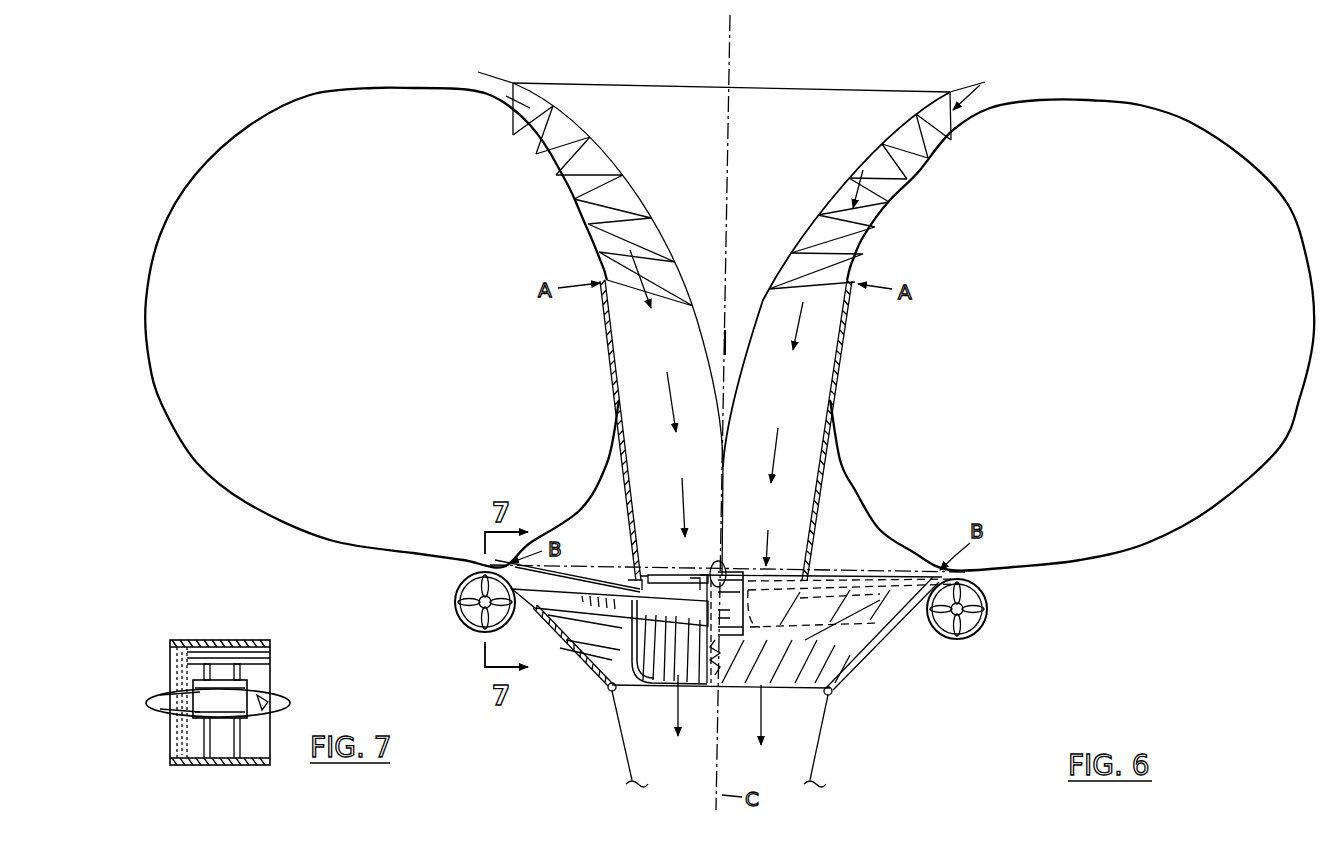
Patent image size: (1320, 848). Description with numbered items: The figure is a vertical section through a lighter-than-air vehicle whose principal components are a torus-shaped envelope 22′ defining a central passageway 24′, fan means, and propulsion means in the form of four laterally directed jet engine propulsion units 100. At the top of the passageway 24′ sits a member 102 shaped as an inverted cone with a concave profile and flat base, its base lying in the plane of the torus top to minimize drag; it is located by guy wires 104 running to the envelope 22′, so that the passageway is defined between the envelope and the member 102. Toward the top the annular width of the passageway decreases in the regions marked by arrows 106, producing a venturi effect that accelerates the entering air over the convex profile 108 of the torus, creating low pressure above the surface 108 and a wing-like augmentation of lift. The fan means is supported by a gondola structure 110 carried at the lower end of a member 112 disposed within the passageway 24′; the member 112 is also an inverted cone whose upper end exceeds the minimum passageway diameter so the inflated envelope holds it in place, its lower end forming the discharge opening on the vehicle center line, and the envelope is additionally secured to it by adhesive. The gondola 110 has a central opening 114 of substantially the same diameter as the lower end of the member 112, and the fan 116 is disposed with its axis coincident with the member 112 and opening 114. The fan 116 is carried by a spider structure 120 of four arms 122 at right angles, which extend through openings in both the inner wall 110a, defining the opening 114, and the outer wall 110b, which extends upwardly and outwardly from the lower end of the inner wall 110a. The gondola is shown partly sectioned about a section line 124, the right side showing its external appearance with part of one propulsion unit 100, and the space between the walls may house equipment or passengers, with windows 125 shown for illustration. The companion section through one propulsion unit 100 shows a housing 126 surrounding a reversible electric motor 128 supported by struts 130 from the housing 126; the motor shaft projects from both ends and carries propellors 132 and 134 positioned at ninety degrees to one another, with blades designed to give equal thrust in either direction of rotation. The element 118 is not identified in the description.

In FIG. 6, the torus-shaped envelope 22′ is at (1226, 174).
In FIG. 6, the central passageway 24′ is at (648, 345).
In FIG. 6, the jet engine propulsion unit 100 is at (738, 568).
In FIG. 6, the inverted cone member 102 is at (729, 112).
In FIG. 6, the guy wires 104 is at (622, 246).
In FIG. 6, the venturi regions 106 is at (530, 158).
In FIG. 6, the convex profile 108 is at (371, 94).
In FIG. 6, the gondola structure 110 is at (900, 570).
In FIG. 6, the inner wall 110a is at (658, 668).
In FIG. 6, the outer wall 110b is at (583, 646).
In FIG. 6, the inverted cone member 112 is at (842, 356).
In FIG. 6, the central opening 114 is at (787, 672).
In FIG. 6, the fan 116 is at (697, 580).
In FIG. 6, the spring element 118 is at (728, 683).
In FIG. 6, the spider structure 120 is at (632, 580).
In FIG. 6, the arms 122 is at (678, 612).
In FIG. 6, the section line 124 is at (753, 686).
In FIG. 6, the windows 125 is at (840, 592).
In FIG. 7, the housing 126 is at (237, 645).
In FIG. 7, the reversible electric motor 128 is at (235, 695).
In FIG. 7, the struts 130 is at (230, 672).
In FIG. 7, the propellor 132 is at (176, 672).
In FIG. 7, the propellor 134 is at (274, 697).